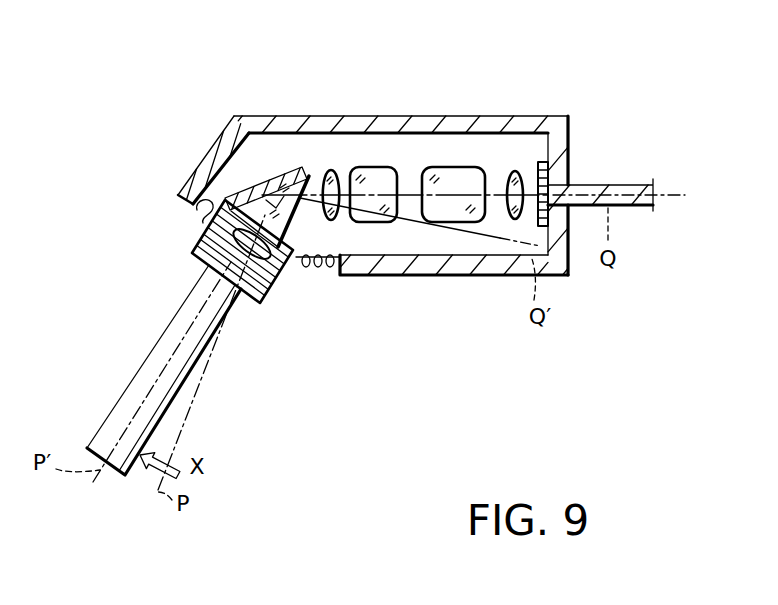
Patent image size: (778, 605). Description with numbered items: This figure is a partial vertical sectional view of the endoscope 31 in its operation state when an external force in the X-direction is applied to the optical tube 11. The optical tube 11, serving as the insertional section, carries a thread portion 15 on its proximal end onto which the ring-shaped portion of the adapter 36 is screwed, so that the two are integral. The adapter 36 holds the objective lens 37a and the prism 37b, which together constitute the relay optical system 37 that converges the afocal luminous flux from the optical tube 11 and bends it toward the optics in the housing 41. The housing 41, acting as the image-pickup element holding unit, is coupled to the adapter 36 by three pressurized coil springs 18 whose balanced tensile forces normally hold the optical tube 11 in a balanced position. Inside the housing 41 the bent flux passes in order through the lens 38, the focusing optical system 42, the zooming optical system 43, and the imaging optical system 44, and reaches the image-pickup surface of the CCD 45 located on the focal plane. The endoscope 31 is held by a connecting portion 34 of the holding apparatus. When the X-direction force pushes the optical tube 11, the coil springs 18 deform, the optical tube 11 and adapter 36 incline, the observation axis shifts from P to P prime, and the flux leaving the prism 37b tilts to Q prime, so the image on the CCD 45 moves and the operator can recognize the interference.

The optical tube 11 is at (150, 345).
The thread portion 15 is at (278, 284).
The coil springs 18 is at (200, 214).
The endoscope 31 is at (459, 355).
The connecting portion 34 is at (613, 186).
The adapter 36 is at (188, 185).
The relay optical system 37 is at (163, 60).
The objective lens 37a is at (220, 192).
The prism 37b is at (263, 200).
The lens 38 is at (327, 172).
The housing 41 is at (480, 276).
The focusing optical system 42 is at (381, 166).
The zooming optical system 43 is at (457, 166).
The imaging optical system 44 is at (516, 170).
The CCD 45 is at (542, 160).